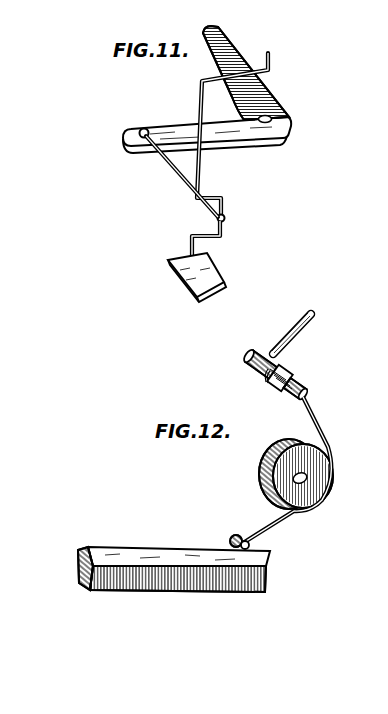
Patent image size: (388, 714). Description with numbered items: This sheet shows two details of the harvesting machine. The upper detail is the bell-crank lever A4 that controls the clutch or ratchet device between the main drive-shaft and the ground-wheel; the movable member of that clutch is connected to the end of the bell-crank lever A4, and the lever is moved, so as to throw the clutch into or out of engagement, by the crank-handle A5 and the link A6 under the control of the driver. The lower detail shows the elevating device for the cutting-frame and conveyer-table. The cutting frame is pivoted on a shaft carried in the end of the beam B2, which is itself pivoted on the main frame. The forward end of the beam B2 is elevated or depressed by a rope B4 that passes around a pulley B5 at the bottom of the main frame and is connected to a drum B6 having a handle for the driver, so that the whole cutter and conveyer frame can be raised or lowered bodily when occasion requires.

In FIG. 11, the bell-crank lever A4 is at (283, 108).
In FIG. 11, the crank-handle A5 is at (270, 71).
In FIG. 11, the link A6 is at (176, 168).
In FIG. 12, the beam B2 is at (174, 559).
In FIG. 12, the rope B4 is at (311, 403).
In FIG. 12, the pulley B5 is at (330, 472).
In FIG. 12, the drum B6 is at (252, 366).